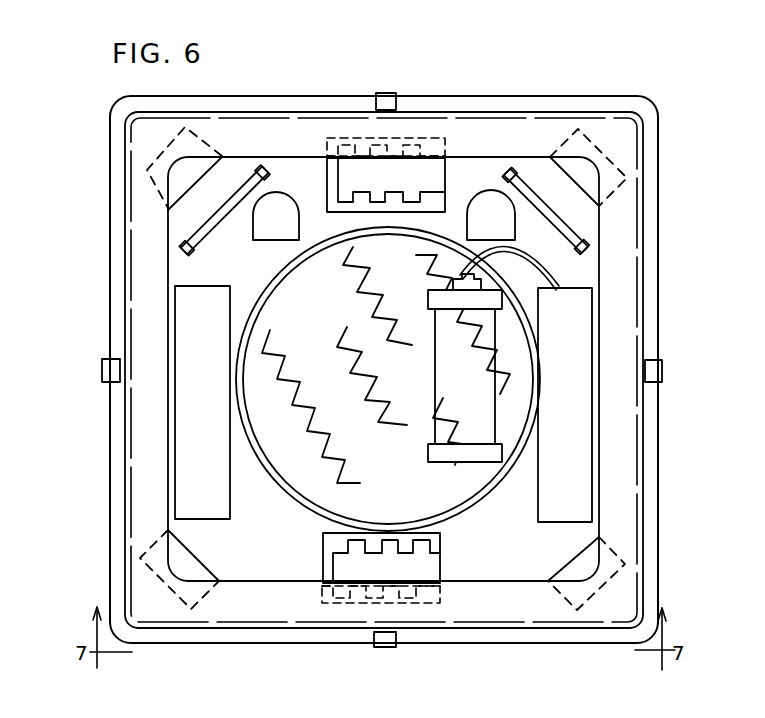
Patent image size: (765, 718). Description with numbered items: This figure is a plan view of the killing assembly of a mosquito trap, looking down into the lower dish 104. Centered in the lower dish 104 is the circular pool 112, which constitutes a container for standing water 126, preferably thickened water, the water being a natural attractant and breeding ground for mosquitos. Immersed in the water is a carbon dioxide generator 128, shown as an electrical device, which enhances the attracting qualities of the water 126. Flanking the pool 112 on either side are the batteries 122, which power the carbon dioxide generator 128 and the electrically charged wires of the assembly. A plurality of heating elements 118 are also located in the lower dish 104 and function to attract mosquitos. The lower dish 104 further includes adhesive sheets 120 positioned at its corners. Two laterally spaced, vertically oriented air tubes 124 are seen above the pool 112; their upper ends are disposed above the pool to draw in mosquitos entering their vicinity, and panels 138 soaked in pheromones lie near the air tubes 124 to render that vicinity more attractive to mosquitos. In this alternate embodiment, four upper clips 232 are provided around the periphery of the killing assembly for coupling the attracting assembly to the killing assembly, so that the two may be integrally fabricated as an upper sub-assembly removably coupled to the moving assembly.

The lower dish 104 is at (517, 548).
The pool 112 is at (320, 513).
The heating elements 118 is at (415, 143).
The adhesive sheets 120 is at (165, 158).
The batteries 122 is at (222, 377).
The air tubes 124 is at (281, 194).
The standing water 126 is at (408, 458).
The carbon dioxide generator 128 is at (487, 414).
The panels 138 is at (200, 228).
The upper clips 232 is at (390, 93).